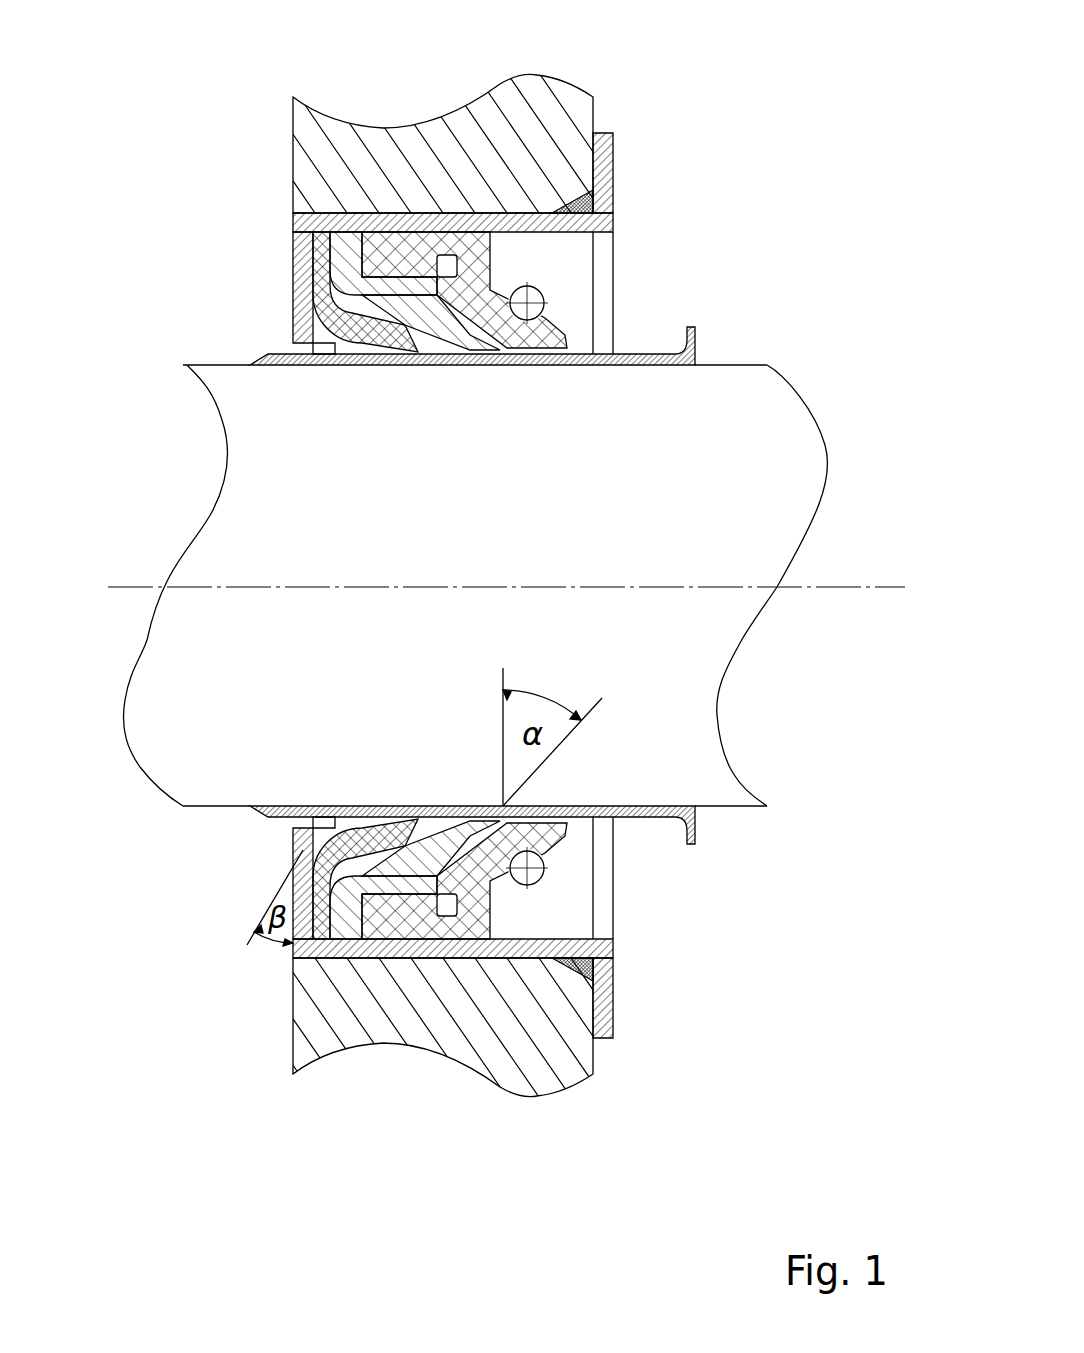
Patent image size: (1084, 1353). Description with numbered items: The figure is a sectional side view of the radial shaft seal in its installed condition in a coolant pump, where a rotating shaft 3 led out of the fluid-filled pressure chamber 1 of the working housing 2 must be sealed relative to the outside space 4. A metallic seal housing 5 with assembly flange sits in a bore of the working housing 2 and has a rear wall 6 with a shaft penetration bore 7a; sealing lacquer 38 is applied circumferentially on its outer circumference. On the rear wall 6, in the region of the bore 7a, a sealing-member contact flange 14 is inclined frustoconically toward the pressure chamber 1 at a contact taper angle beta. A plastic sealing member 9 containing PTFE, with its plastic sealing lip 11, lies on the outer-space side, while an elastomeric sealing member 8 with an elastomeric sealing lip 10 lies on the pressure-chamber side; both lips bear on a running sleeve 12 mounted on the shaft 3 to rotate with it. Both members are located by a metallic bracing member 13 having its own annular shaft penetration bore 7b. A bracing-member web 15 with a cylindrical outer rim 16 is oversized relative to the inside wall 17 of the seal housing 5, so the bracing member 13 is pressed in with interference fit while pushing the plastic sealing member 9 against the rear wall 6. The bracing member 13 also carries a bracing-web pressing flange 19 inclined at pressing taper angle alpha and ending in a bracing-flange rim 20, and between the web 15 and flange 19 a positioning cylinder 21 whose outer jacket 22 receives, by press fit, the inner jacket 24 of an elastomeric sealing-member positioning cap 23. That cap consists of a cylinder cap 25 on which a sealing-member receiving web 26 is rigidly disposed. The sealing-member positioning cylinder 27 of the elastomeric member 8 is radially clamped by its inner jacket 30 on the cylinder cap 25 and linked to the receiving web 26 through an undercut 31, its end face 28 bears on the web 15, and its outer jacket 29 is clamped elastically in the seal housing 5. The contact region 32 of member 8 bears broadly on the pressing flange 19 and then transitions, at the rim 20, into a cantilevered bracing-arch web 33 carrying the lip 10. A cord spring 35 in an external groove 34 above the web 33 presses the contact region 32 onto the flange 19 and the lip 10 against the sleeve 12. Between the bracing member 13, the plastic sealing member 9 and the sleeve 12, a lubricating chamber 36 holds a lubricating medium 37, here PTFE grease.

The pressure chamber 1 is at (628, 302).
The working housing 2 is at (437, 143).
The shaft 3 is at (670, 692).
The outside space 4 is at (268, 275).
The seal housing 5 is at (610, 165).
The rear wall 6 is at (305, 270).
The shaft penetration bore 7a is at (424, 338).
The shaft penetration bore 7b is at (478, 345).
The elastomeric sealing member 8 is at (393, 237).
The plastic sealing member 9 is at (357, 280).
The elastomeric sealing lip 10 is at (548, 347).
The plastic sealing lip 11 is at (410, 340).
The running sleeve 12 is at (613, 365).
The bracing member 13 is at (340, 262).
The sealing-member contact flange 14 is at (300, 348).
The bracing-member web 15 is at (295, 958).
The bracing-member-web outer rim 16 is at (352, 930).
The inside wall 17 is at (607, 942).
The bracing-web pressing flange 19 is at (553, 305).
The bracing-flange rim 20 is at (512, 830).
The positioning cylinder 21 is at (392, 822).
The positioning cylinder outer jacket 22 is at (508, 853).
The elastomeric sealing-member positioning cap 23 is at (440, 290).
The position-securing-cap inner jacket 24 is at (357, 870).
The cylinder cap 25 is at (485, 938).
The sealing-member receiving web 26 is at (490, 902).
The sealing-member positioning cylinder 27 is at (430, 950).
The end face 28 is at (343, 947).
The outer jacket 29 is at (384, 950).
The inner jacket 30 is at (497, 955).
The undercut 31 is at (598, 975).
The contact region 32 is at (492, 300).
The bracing-arch web 33 is at (548, 812).
The external groove 34 is at (545, 845).
The cord spring 35 is at (512, 286).
The lubricating chamber 36 is at (318, 320).
The lubricating medium 37 is at (427, 832).
The sealing lacquer 38 is at (600, 973).